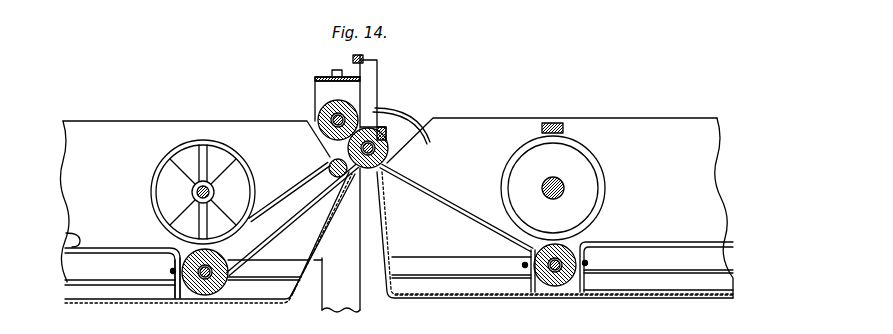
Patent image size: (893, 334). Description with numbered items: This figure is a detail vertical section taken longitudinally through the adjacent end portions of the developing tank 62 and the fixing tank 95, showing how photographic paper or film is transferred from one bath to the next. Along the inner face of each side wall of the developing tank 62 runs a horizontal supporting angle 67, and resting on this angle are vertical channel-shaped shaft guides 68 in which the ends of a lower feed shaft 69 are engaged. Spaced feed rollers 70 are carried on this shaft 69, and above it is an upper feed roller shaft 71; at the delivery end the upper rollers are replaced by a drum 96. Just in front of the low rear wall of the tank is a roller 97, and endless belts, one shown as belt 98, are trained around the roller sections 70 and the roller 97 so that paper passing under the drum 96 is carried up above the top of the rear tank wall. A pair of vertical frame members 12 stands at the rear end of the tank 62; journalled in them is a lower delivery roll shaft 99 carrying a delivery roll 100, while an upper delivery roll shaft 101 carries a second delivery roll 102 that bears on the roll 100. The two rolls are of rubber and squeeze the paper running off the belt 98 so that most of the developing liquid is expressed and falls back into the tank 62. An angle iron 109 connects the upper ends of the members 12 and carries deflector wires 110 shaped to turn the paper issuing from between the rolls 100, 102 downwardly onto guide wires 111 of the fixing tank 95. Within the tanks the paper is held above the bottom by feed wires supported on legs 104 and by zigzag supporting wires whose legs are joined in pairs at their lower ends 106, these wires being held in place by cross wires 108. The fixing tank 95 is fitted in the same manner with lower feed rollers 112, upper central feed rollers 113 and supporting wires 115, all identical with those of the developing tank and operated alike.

The vertical frame members 12 is at (350, 306).
The developing tank 62 is at (128, 132).
The supporting angle 67 is at (72, 273).
The shaft guides 68 is at (210, 157).
The lower feed shaft 69 is at (207, 272).
The feed rollers 70 is at (212, 289).
The upper feed roller shaft 71 is at (216, 193).
The fixing tank 95 is at (509, 103).
The drum 96 is at (198, 183).
The roller 97 is at (332, 163).
The belt 98 is at (273, 235).
The lower delivery roll shaft 99 is at (376, 129).
The delivery roll 100 is at (388, 157).
The upper delivery roll shaft 101 is at (318, 113).
The delivery roll 102 is at (322, 100).
The legs 104 is at (66, 233).
The connected lower ends 106 is at (177, 288).
The cross wires 108 is at (170, 271).
The angle iron 109 is at (313, 78).
The deflector wires 110 is at (401, 119).
The guide wires 111 is at (476, 186).
The lower feed rollers 112 is at (540, 278).
The upper central feed rollers 113 is at (605, 208).
The supporting wires 115 is at (689, 231).